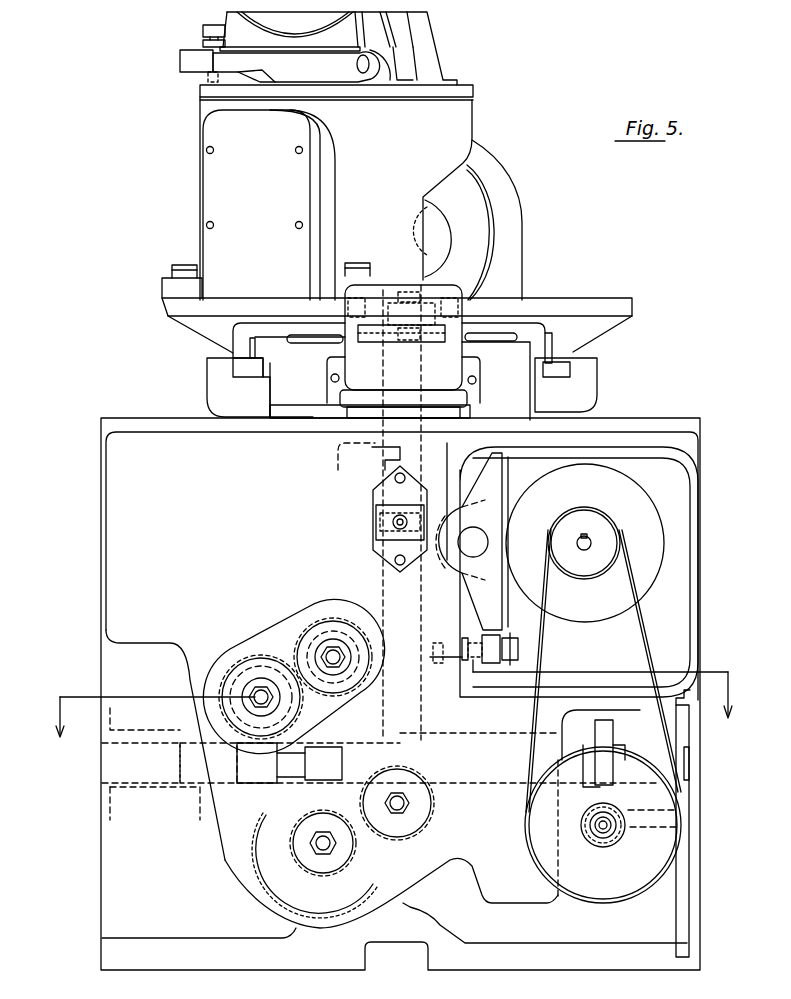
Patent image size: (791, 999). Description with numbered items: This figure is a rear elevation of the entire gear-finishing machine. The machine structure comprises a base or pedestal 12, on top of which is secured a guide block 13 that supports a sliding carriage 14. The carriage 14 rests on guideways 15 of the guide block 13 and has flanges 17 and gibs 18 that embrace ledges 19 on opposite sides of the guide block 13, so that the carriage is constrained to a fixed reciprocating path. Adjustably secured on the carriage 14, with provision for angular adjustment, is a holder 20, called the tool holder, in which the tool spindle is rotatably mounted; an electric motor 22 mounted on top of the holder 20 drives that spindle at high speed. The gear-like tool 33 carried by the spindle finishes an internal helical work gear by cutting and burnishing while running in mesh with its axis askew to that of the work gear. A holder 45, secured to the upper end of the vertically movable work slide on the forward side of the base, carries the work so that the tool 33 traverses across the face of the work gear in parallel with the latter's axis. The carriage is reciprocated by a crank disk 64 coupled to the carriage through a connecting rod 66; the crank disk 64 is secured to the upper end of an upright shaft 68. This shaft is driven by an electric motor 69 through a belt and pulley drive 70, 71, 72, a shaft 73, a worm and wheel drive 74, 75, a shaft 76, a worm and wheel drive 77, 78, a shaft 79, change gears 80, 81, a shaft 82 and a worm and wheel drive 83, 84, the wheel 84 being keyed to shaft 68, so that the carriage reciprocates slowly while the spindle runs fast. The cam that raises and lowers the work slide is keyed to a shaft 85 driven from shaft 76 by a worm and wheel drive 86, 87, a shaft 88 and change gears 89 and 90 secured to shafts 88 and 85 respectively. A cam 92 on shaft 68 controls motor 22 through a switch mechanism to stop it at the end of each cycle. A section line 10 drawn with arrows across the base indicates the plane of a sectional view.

The section line 10 is at (397, 723).
The base or pedestal 12 is at (108, 540).
The guide block 13 is at (310, 420).
The sliding carriage 14 is at (515, 316).
The guideways 15 is at (277, 340).
The flanges 17 is at (237, 347).
The gibs 18 is at (243, 370).
The ledges 19 is at (256, 337).
The tool holder 20 is at (458, 128).
The electric motor 22 is at (240, 15).
The gear-like tool 33 is at (440, 240).
The work holder 45 is at (512, 240).
The crank disk 64 is at (382, 345).
The connecting rod 66 is at (393, 292).
The upright shaft 68 is at (380, 468).
The electric motor 69 is at (628, 480).
The belt and pulley drive 70 is at (580, 575).
The belt and pulley drive 71 is at (640, 635).
The belt and pulley drive 72 is at (555, 762).
The shaft 73 is at (618, 835).
The worm and wheel drive 74 is at (600, 845).
The worm and wheel drive 75 is at (614, 800).
The shaft 76 is at (565, 805).
The worm and wheel drive 77 is at (248, 800).
The worm and wheel drive 78 is at (222, 660).
The shaft 79 is at (267, 658).
The change gear 80 is at (262, 693).
The change gear 81 is at (320, 617).
The shaft 82 is at (336, 654).
The worm and wheel drive 83 is at (338, 622).
The worm and wheel drive 84 is at (445, 640).
The shaft 85 is at (420, 795).
The worm and wheel drive 86 is at (340, 713).
The worm and wheel drive 87 is at (262, 850).
The shaft 88 is at (310, 848).
The change gear 89 is at (325, 877).
The change gear 90 is at (420, 845).
The cam 92 is at (374, 520).